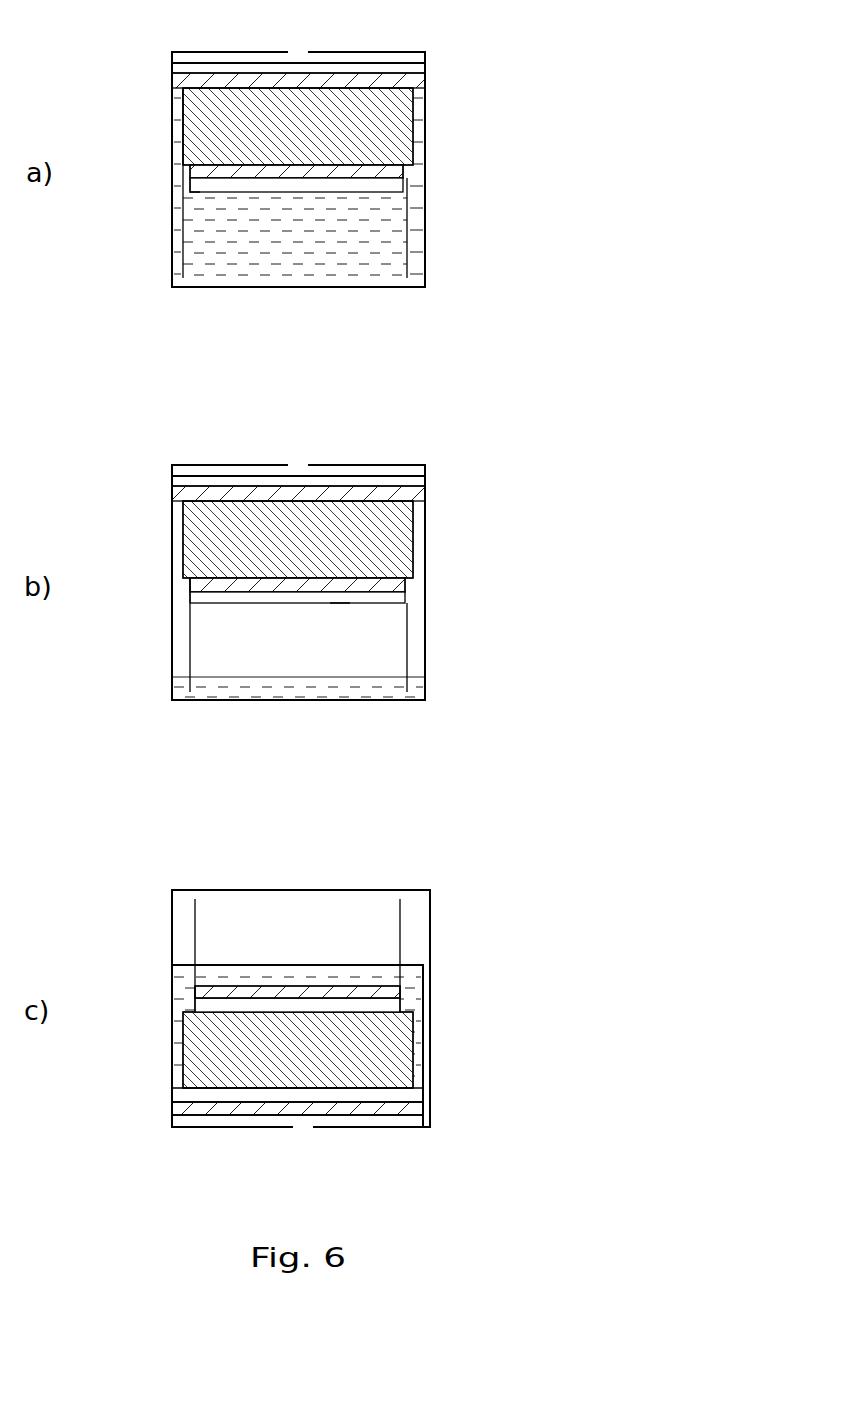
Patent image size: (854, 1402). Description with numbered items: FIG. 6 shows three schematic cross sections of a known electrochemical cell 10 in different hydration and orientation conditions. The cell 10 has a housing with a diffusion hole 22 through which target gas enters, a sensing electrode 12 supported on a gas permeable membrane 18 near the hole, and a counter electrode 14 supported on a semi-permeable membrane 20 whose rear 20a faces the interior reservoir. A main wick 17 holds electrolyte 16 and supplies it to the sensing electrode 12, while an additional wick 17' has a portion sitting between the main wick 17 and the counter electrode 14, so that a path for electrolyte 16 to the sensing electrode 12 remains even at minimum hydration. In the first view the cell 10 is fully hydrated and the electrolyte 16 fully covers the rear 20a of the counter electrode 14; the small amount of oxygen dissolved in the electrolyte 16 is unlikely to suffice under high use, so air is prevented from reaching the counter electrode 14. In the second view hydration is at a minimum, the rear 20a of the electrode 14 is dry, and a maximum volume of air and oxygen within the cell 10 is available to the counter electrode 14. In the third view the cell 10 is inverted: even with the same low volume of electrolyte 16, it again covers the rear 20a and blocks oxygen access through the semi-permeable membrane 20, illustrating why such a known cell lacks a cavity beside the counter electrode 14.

The cell 10 is at (280, 292).
The sensing electrode 12 is at (419, 72).
The counter electrode 14 is at (401, 175).
The electrolyte 16 is at (376, 251).
The wick 17 is at (347, 588).
The additional wick 17' is at (246, 558).
The gas permeable membrane 18 is at (397, 56).
The semi-permeable membrane 20 is at (388, 192).
The rear of the electrode 20a is at (227, 193).
The diffusion hole 22 is at (296, 44).